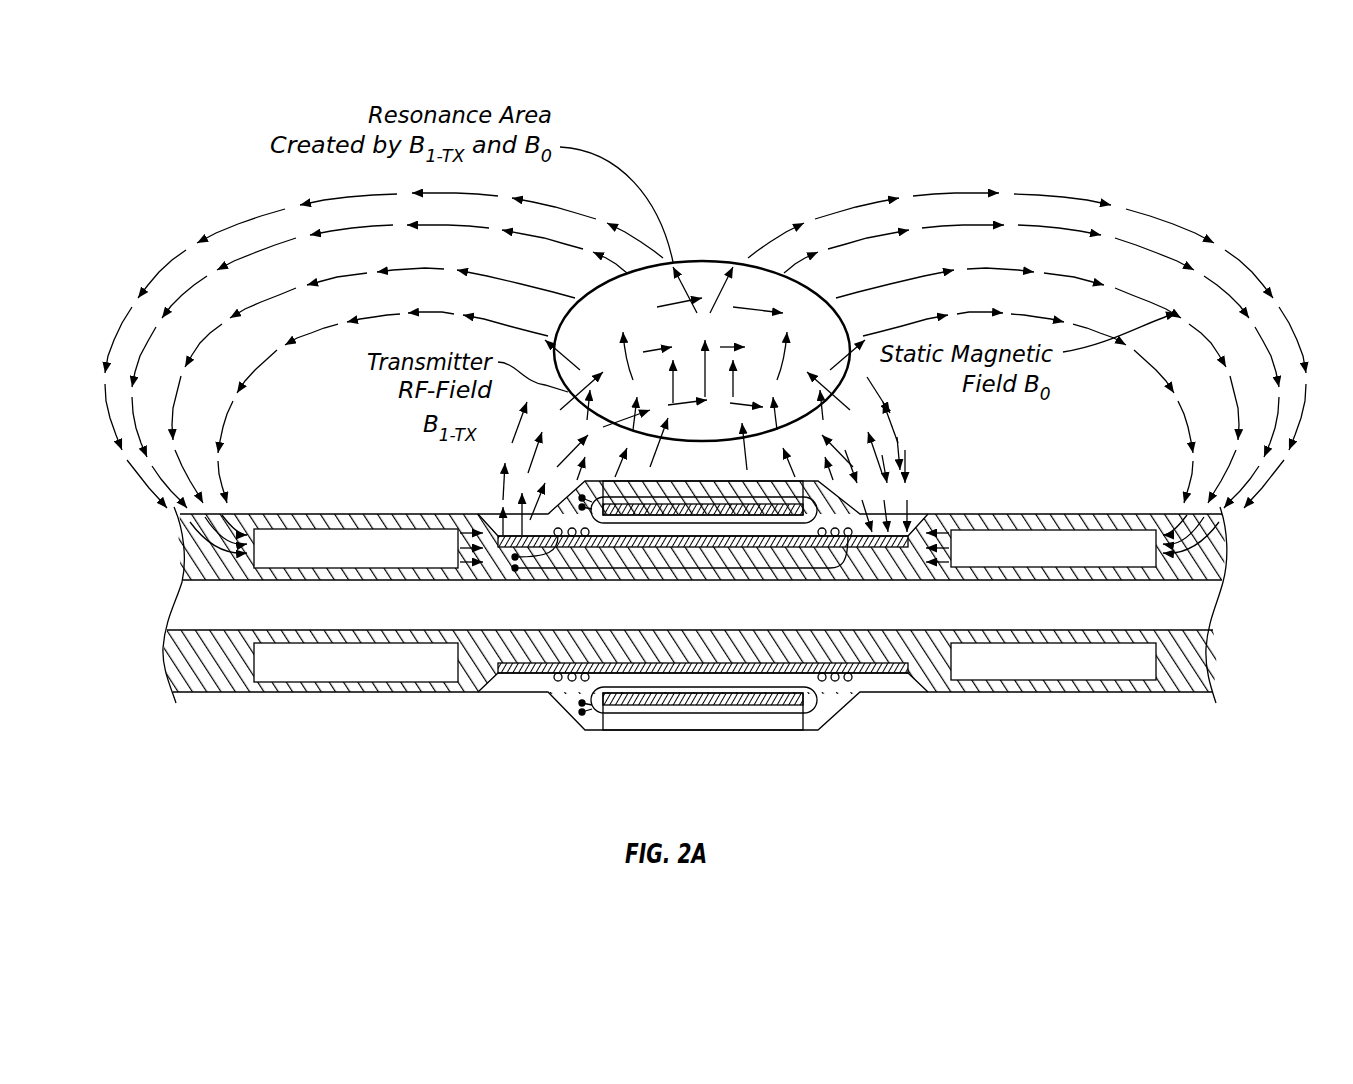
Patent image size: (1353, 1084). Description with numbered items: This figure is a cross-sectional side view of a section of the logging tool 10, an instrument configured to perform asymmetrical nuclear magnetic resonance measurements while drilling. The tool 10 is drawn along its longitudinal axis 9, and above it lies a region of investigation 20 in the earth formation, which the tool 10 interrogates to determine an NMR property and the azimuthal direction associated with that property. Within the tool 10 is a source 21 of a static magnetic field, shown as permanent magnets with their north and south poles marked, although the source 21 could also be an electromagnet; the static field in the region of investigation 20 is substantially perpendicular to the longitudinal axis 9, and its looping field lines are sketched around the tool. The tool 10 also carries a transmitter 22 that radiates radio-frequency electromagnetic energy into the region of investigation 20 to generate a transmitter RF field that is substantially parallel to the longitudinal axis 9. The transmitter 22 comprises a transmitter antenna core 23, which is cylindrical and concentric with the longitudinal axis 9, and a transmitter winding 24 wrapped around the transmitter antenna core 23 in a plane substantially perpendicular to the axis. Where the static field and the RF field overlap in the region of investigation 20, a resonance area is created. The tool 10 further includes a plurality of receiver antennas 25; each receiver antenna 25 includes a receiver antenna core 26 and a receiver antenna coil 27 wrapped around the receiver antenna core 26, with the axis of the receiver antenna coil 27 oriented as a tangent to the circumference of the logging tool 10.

The longitudinal axis 9 is at (185, 608).
The logging tool 10 is at (187, 552).
The region of investigation 20 is at (708, 262).
The source of a static magnetic field 21 is at (325, 535).
The transmitter 22 is at (502, 693).
The transmitter antenna core 23 is at (520, 670).
The transmitter winding 24 is at (558, 673).
The receiver antenna 25 is at (735, 717).
The receiver antenna core 26 is at (693, 700).
The receiver antenna coil 27 is at (815, 707).